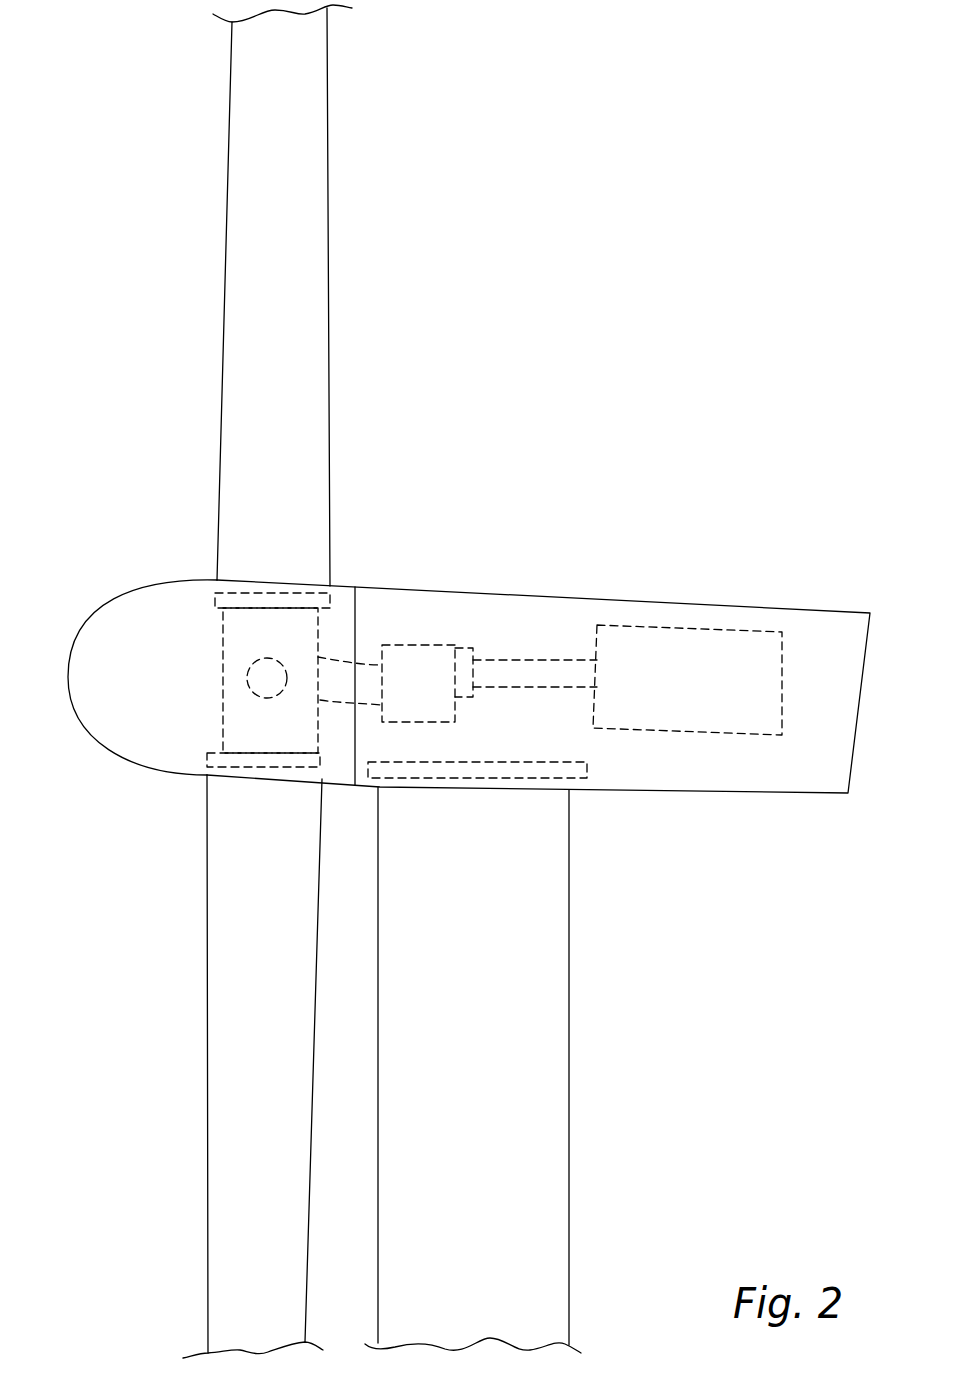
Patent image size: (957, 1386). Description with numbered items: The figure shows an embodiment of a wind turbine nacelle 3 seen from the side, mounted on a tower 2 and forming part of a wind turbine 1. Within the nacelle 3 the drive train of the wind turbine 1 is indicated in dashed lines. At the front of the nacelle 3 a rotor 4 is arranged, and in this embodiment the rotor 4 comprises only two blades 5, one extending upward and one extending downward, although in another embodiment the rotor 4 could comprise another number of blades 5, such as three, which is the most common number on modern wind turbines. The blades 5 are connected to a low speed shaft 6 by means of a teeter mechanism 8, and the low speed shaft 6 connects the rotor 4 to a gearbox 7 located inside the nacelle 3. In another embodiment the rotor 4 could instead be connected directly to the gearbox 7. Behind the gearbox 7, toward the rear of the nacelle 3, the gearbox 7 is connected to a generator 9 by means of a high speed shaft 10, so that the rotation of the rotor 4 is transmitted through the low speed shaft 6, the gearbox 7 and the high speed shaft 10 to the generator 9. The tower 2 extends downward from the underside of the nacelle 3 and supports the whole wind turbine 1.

The wind turbine 1 is at (736, 1076).
The tower 2 is at (546, 1163).
The wind turbine nacelle 3 is at (747, 763).
The rotor 4 is at (165, 617).
The blades 5 is at (251, 272).
The low speed shaft 6 is at (337, 693).
The gearbox 7 is at (412, 652).
The teeter mechanism 8 is at (260, 676).
The generator 9 is at (720, 638).
The high speed shaft 10 is at (493, 667).